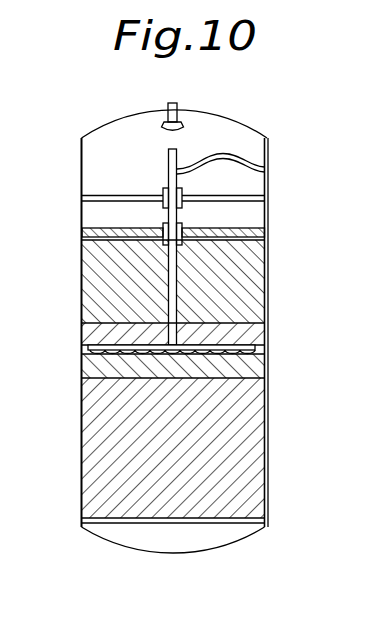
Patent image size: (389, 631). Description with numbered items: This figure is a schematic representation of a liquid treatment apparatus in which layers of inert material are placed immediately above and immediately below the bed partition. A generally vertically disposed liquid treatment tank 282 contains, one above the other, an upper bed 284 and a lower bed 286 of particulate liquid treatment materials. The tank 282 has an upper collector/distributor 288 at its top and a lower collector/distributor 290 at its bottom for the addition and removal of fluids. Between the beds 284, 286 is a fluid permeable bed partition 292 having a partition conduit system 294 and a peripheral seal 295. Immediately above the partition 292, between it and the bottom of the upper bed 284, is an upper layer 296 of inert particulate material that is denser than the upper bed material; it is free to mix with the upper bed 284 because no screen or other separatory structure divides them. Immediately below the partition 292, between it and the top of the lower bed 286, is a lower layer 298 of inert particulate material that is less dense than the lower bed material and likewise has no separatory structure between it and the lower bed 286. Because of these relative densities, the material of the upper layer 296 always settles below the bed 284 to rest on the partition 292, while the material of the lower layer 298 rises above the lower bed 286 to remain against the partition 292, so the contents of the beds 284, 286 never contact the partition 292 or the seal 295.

The liquid treatment tank 282 is at (81, 183).
The upper bed 284 is at (88, 286).
The lower bed 286 is at (248, 465).
The upper collector/distributor 288 is at (168, 128).
The lower collector/distributor 290 is at (157, 527).
The fluid permeable bed partition 292 is at (242, 357).
The partition conduit system 294 is at (108, 345).
The peripheral seal 295 is at (86, 349).
The upper layer 296 is at (245, 337).
The lower layer 298 is at (88, 369).